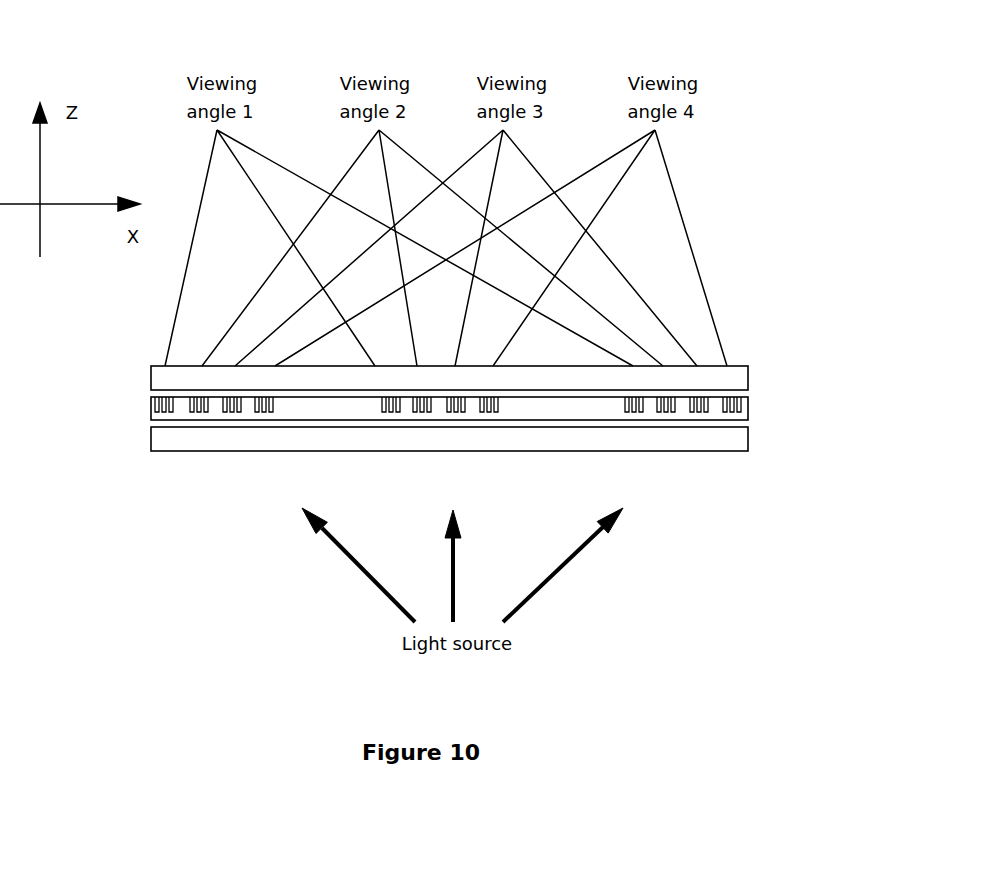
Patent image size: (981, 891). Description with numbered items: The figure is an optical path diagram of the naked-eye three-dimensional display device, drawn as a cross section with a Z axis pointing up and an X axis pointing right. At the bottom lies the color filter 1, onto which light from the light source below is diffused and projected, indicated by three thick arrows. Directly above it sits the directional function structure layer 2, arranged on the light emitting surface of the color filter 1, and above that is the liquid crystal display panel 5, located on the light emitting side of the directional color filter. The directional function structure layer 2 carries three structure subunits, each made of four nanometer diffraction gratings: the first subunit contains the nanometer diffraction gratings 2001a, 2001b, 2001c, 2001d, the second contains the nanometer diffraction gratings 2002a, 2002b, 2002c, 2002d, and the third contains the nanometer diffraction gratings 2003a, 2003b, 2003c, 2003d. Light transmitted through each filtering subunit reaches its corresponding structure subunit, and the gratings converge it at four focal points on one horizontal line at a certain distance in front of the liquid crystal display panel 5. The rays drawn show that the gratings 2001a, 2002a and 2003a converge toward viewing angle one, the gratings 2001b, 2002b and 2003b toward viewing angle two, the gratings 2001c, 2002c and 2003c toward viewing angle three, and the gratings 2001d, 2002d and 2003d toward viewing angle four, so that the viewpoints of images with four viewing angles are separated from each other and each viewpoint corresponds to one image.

The color filter 1 is at (725, 452).
The directional function structure layer 2 is at (465, 424).
The liquid crystal display panel 5 is at (151, 368).
The nanometer diffraction grating 2001a is at (157, 405).
The nanometer diffraction grating 2001b is at (205, 407).
The nanometer diffraction grating 2001c is at (232, 407).
The nanometer diffraction grating 2001d is at (268, 406).
The nanometer diffraction grating 2002a is at (385, 410).
The nanometer diffraction grating 2002b is at (424, 410).
The nanometer diffraction grating 2002c is at (453, 410).
The nanometer diffraction grating 2002d is at (497, 407).
The nanometer diffraction grating 2003a is at (626, 410).
The nanometer diffraction grating 2003b is at (670, 410).
The nanometer diffraction grating 2003c is at (695, 402).
The nanometer diffraction grating 2003d is at (740, 399).